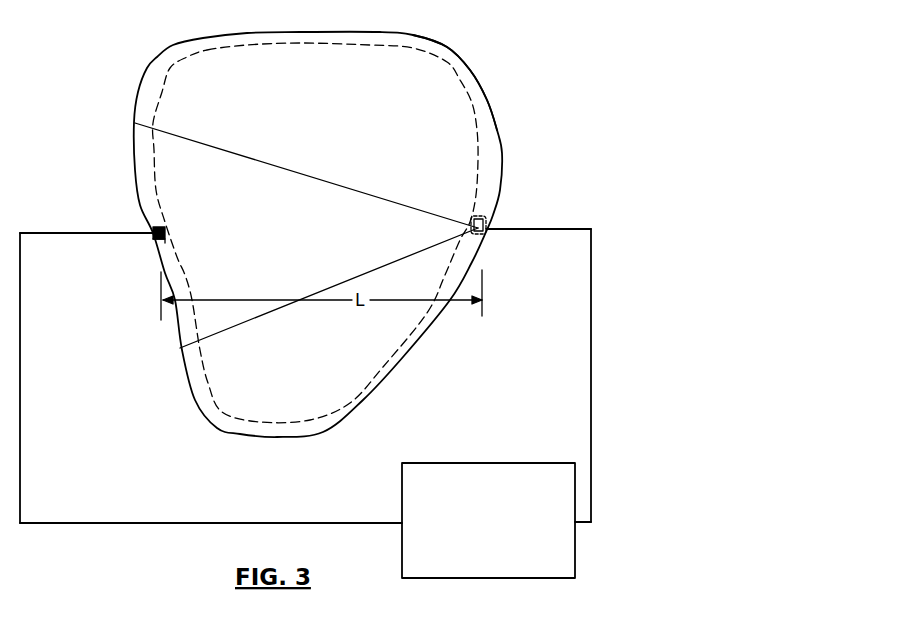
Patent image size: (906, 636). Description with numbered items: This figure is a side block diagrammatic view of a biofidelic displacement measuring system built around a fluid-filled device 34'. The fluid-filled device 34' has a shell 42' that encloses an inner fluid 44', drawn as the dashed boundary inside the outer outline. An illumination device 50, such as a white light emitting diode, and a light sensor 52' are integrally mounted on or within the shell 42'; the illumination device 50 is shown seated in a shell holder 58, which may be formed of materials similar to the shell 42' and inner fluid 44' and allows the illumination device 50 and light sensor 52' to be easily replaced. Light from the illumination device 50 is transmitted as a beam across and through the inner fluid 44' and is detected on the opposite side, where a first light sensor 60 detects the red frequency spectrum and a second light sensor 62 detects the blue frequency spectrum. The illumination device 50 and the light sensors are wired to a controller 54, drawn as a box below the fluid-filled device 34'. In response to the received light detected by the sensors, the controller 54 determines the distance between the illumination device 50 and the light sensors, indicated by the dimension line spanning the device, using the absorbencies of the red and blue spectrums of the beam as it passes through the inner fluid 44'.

The fluid-filled device 34' is at (344, 234).
The shell 42' is at (467, 82).
The inner fluid 44' is at (347, 233).
The shell holder 58 is at (480, 216).
The illumination device 50 is at (477, 248).
The light sensor 52' is at (137, 259).
The first light sensor 60 is at (156, 225).
The second light sensor 62 is at (160, 247).
The controller 54 is at (472, 463).